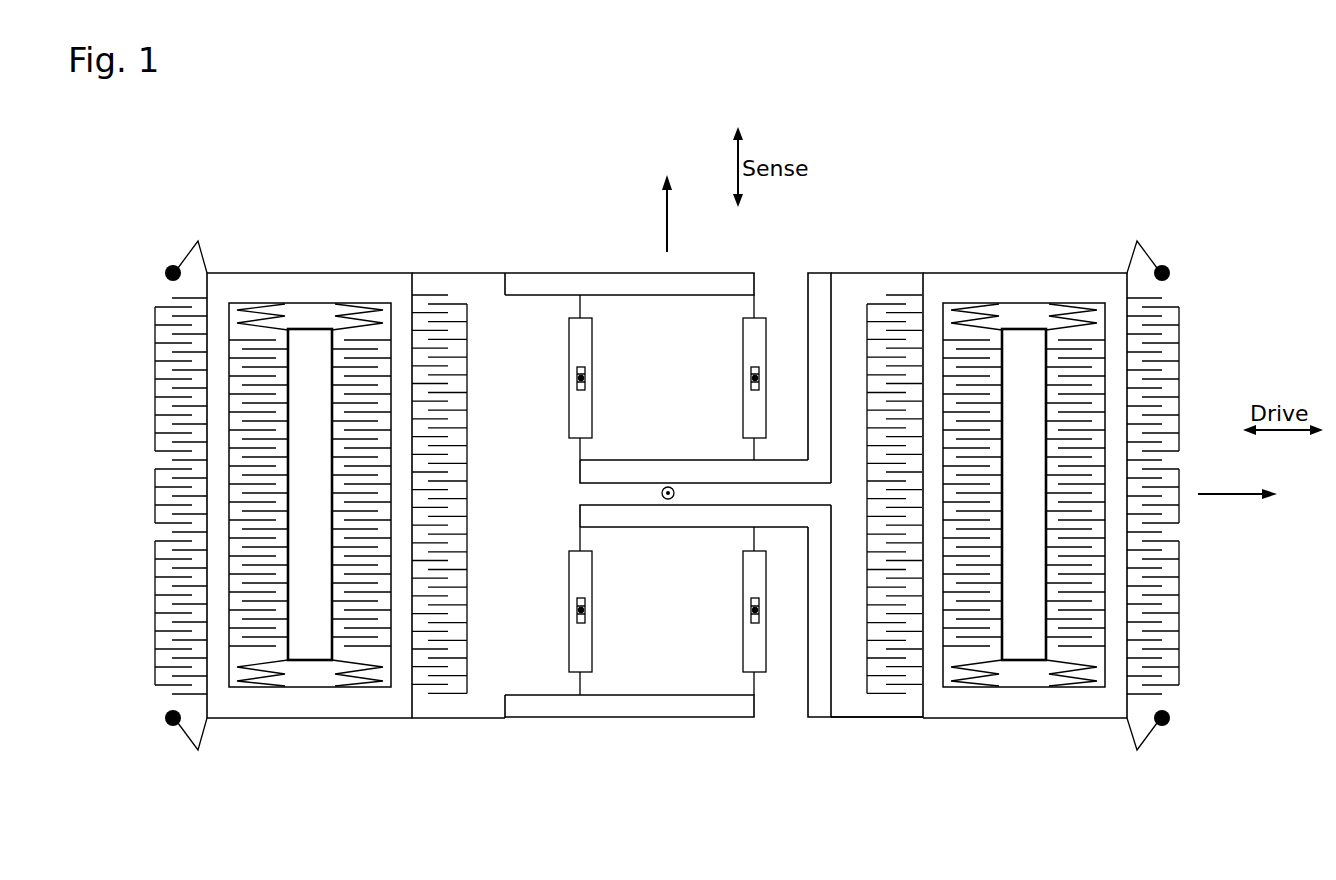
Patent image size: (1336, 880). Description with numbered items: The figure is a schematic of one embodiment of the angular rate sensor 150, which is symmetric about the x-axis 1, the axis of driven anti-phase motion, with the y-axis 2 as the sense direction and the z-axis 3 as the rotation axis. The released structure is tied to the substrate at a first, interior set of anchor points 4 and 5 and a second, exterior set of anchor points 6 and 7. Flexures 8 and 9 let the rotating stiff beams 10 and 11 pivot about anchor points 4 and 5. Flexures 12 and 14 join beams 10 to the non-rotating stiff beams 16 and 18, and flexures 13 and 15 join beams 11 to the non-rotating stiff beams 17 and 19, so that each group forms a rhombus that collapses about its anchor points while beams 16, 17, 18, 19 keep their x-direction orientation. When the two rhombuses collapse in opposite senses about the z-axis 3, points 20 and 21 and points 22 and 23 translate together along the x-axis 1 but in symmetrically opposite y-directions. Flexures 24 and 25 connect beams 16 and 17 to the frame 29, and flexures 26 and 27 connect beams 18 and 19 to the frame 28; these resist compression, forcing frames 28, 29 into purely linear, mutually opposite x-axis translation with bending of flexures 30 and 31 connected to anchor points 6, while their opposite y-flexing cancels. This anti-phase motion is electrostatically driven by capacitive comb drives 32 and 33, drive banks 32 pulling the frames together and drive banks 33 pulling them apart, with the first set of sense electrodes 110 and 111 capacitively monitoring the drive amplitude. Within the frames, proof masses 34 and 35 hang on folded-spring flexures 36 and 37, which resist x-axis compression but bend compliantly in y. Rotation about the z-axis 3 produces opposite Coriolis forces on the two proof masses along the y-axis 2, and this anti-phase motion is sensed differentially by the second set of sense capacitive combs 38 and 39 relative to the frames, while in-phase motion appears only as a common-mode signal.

The x-axis 1 is at (1226, 497).
The y-axis 2 is at (664, 222).
The z-axis 3 is at (671, 505).
The anchor point 4 is at (582, 382).
The anchor point 5 is at (582, 613).
The anchor point 6 is at (166, 270).
The anchor point 7 is at (165, 722).
The flexure 8 is at (577, 376).
The flexure 9 is at (577, 607).
The stiff beam 10 is at (583, 412).
The stiff beam 11 is at (583, 646).
The flexure 12 is at (578, 450).
The flexure 13 is at (578, 540).
The flexure 14 is at (578, 308).
The flexure 15 is at (578, 683).
The stiff beam 16 is at (688, 473).
The stiff beam 17 is at (655, 514).
The stiff beam 18 is at (598, 284).
The stiff beam 19 is at (590, 720).
The point 20 is at (831, 273).
The point 21 is at (831, 718).
The point 22 is at (505, 272).
The point 23 is at (505, 718).
The flexure 24 is at (878, 273).
The flexure 25 is at (880, 718).
The flexure 26 is at (454, 272).
The flexure 27 is at (454, 718).
The frame 28 is at (317, 285).
The frame 29 is at (1017, 283).
The flexure 30 is at (199, 244).
The flexure 31 is at (203, 737).
The capacitive comb drive 32 is at (449, 364).
The capacitive comb drive 33 is at (176, 362).
The proof mass 34 is at (320, 470).
The proof mass 35 is at (1020, 470).
The flexure 36 is at (262, 322).
The flexure 37 is at (262, 672).
The sense capacitive comb 38 is at (352, 540).
The sense capacitive comb 39 is at (1066, 540).
The sense electrode 110 is at (172, 497).
The sense electrode 111 is at (1168, 490).
The rate sensor 150 is at (200, 160).